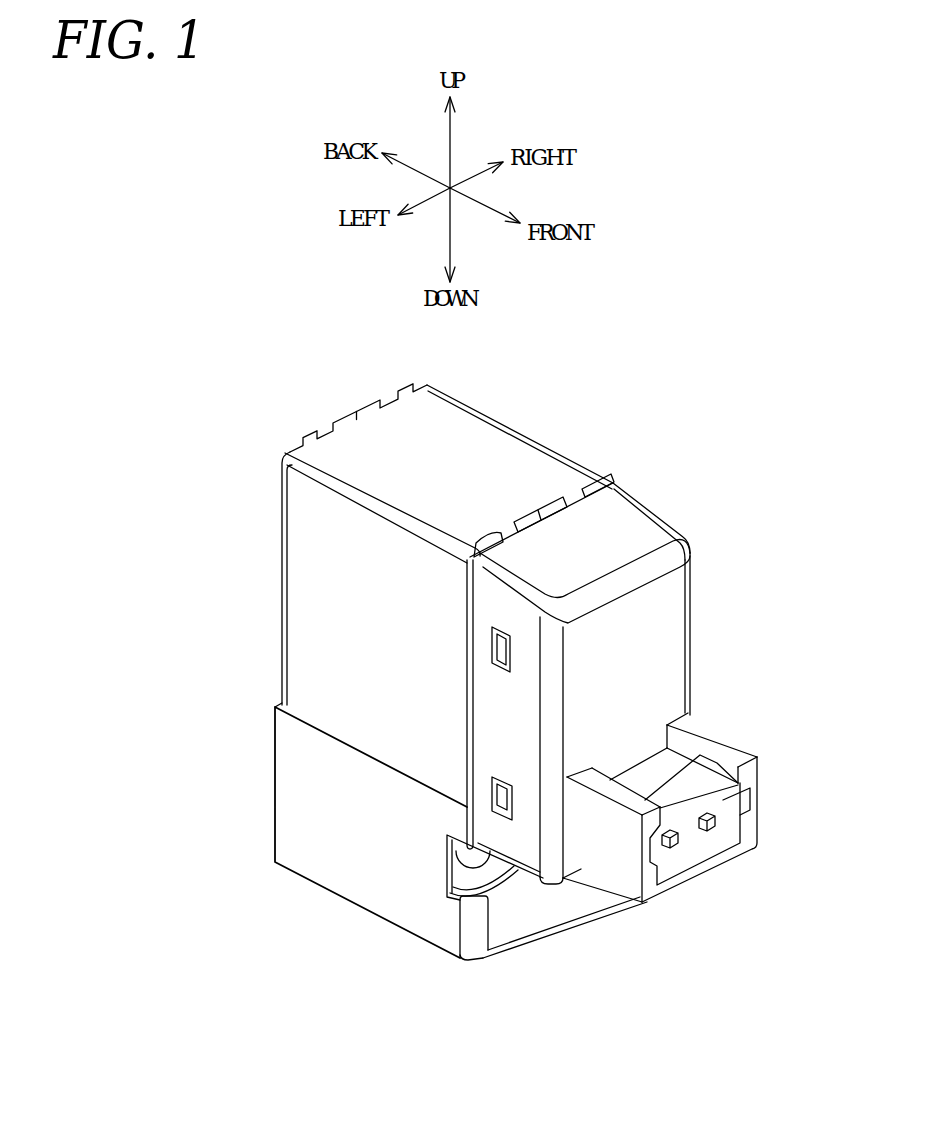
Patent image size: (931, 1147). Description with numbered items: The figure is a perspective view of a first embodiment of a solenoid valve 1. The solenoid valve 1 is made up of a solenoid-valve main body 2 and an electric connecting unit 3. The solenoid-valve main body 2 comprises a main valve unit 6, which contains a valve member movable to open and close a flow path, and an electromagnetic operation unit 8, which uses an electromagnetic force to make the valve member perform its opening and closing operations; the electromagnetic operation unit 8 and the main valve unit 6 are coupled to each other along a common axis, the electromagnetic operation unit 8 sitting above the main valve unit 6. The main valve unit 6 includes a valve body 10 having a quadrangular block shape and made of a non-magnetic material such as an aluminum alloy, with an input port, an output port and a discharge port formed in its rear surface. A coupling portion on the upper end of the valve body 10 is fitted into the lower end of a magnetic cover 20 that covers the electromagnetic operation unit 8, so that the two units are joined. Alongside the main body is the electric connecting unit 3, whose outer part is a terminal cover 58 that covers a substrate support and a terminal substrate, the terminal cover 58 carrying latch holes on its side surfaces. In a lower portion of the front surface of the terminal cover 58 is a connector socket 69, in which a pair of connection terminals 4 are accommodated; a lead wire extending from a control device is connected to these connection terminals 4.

The solenoid valve 1 is at (486, 639).
The solenoid-valve main body 2 is at (563, 389).
The electric connecting unit 3 is at (748, 579).
The connection terminals 4 is at (673, 843).
The main valve unit 6 is at (255, 769).
The electromagnetic operation unit 8 is at (248, 572).
The valve body 10 is at (302, 832).
The magnetic cover 20 is at (325, 638).
The terminal cover 58 is at (660, 667).
The connector socket 69 is at (665, 865).